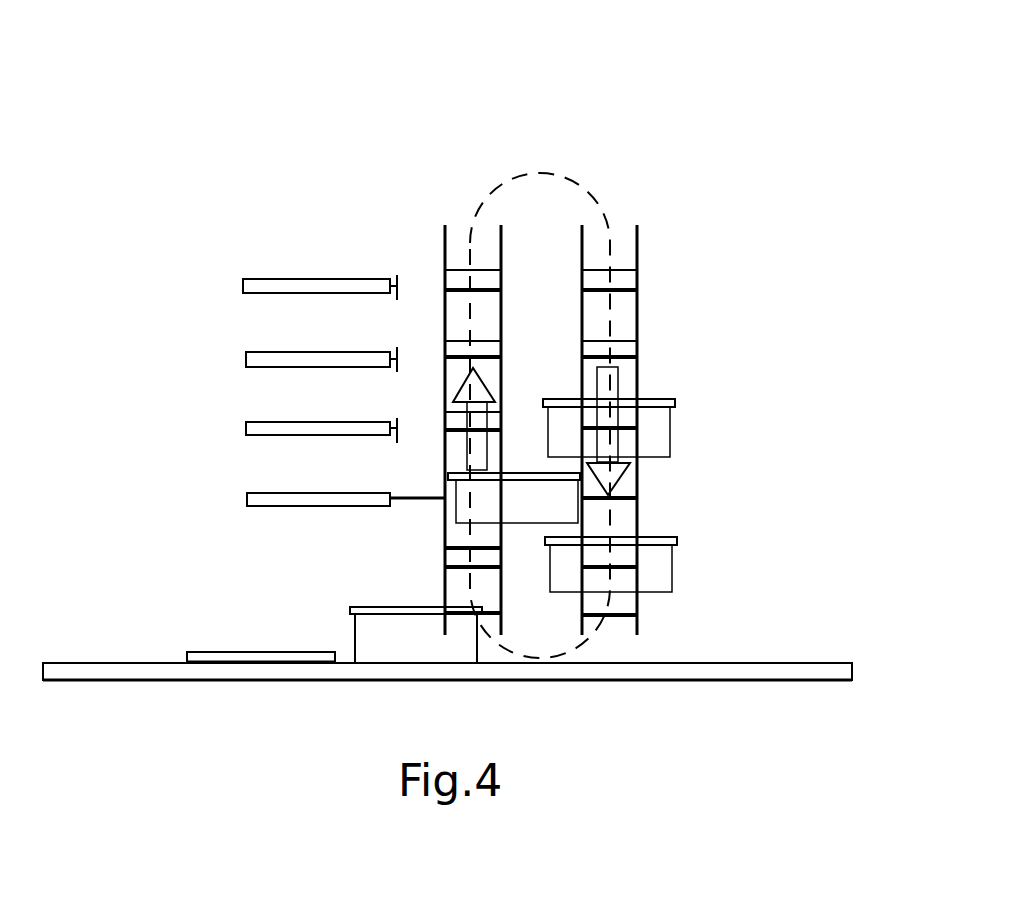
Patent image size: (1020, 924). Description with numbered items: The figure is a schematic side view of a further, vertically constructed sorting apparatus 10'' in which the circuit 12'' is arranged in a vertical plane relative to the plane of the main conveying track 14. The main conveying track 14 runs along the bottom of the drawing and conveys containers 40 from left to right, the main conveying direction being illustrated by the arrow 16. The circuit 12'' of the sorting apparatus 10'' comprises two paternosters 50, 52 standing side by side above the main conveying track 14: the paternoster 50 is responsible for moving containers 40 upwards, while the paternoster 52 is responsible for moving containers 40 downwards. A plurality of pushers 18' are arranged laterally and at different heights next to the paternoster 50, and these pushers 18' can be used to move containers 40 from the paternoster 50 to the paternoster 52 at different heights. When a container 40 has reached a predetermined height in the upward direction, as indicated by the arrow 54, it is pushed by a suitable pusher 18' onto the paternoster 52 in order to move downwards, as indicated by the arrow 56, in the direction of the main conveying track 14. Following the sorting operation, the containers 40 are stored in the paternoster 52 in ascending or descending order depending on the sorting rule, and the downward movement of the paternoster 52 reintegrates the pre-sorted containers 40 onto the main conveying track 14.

The sorting apparatus 10'' is at (205, 94).
The circuit 12'' is at (540, 341).
The main conveying track 14 is at (67, 668).
The arrow 16 is at (447, 709).
The pushers 18' is at (299, 387).
The container 40 is at (371, 605).
The paternoster 50 is at (458, 208).
The paternoster 52 is at (617, 214).
The arrow 54 is at (456, 394).
The arrow 56 is at (610, 385).